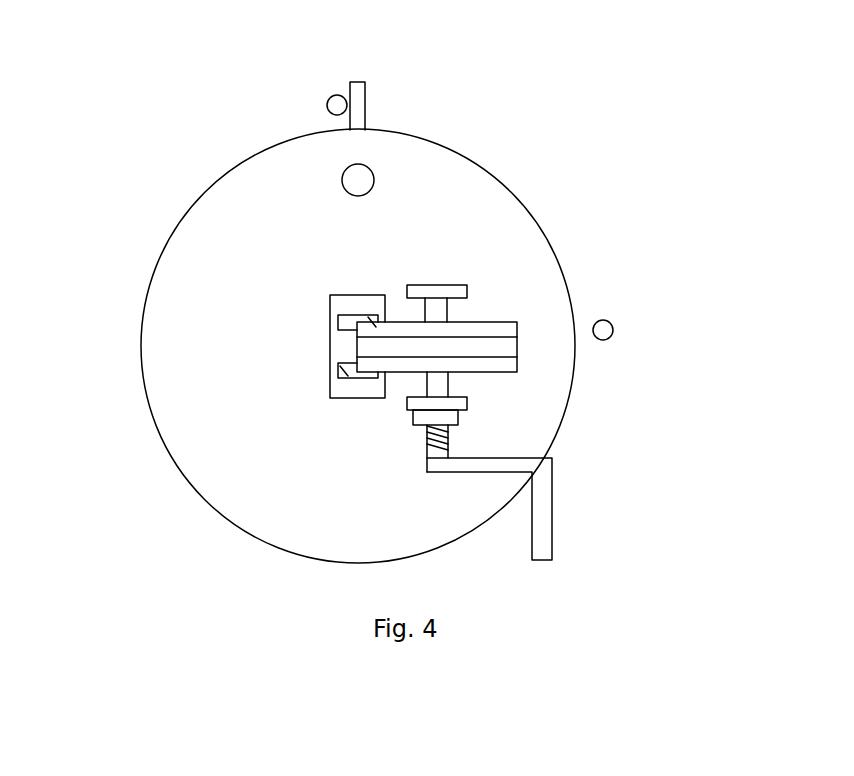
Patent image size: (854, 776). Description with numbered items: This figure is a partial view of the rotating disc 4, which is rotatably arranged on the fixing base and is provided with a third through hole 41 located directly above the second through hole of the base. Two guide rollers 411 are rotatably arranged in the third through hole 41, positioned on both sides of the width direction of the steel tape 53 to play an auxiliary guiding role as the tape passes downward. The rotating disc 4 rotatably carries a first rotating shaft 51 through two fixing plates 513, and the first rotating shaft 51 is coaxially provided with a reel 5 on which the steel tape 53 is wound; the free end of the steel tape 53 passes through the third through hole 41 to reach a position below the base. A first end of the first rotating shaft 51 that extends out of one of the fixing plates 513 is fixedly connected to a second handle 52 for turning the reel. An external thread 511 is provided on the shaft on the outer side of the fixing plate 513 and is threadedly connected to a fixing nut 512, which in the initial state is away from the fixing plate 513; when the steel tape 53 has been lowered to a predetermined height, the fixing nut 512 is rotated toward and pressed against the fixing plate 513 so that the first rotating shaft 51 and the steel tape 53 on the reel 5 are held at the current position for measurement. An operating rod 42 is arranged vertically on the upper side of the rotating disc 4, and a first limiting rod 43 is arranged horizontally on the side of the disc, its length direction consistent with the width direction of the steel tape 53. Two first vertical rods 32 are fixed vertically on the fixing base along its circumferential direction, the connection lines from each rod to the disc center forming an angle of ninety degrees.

The rotating disc 4 is at (223, 317).
The third through hole 41 is at (343, 295).
The guide roller 411 is at (338, 366).
The operating rod 42 is at (358, 181).
The first limiting rod 43 is at (366, 82).
The reel 5 is at (517, 322).
The first rotating shaft 51 is at (425, 381).
The external thread 511 is at (427, 445).
The fixing nut 512 is at (460, 415).
The fixing plate 513 is at (435, 285).
The second handle 52 is at (552, 513).
The steel tape 53 is at (508, 348).
The first vertical rod 32 is at (605, 328).